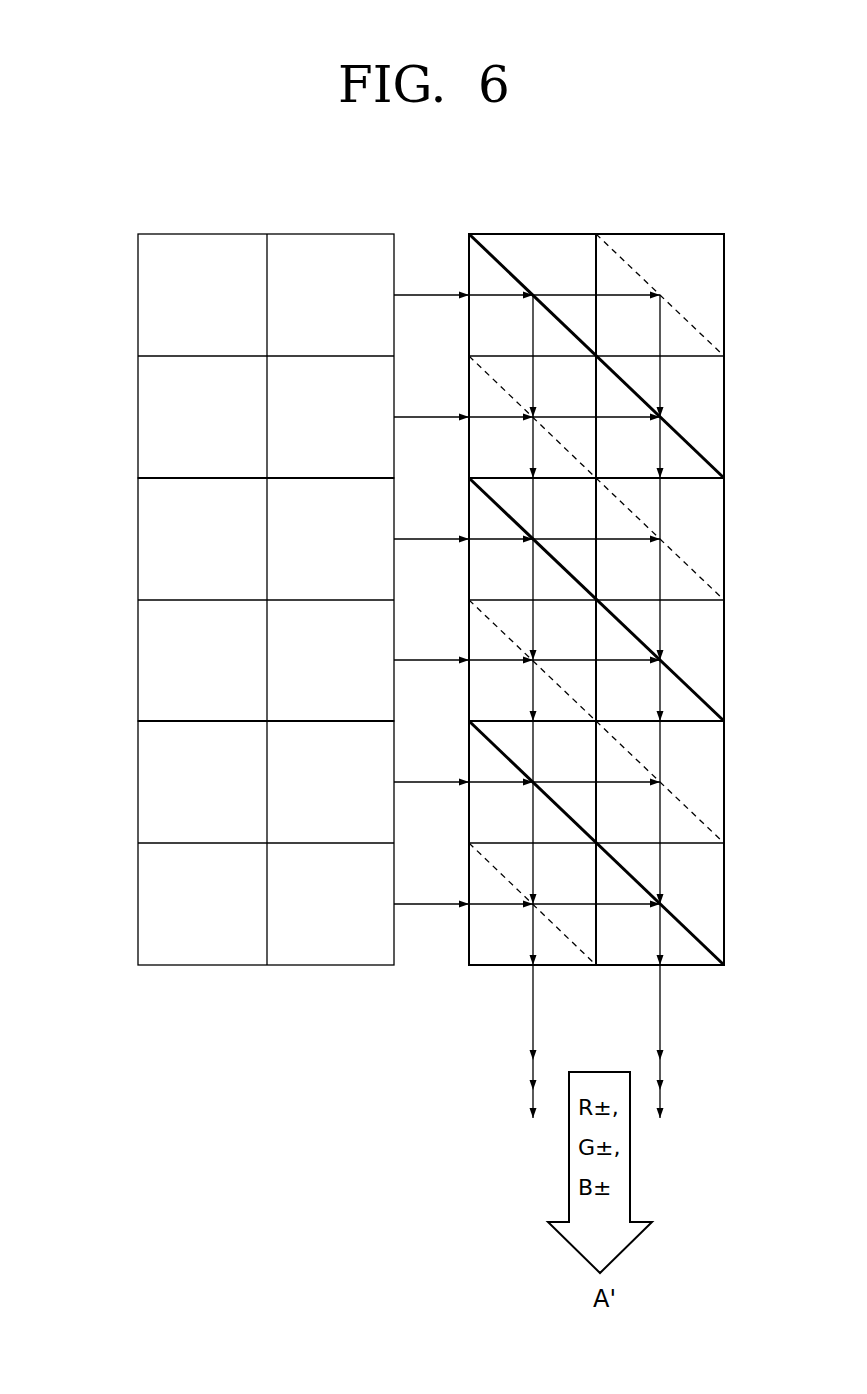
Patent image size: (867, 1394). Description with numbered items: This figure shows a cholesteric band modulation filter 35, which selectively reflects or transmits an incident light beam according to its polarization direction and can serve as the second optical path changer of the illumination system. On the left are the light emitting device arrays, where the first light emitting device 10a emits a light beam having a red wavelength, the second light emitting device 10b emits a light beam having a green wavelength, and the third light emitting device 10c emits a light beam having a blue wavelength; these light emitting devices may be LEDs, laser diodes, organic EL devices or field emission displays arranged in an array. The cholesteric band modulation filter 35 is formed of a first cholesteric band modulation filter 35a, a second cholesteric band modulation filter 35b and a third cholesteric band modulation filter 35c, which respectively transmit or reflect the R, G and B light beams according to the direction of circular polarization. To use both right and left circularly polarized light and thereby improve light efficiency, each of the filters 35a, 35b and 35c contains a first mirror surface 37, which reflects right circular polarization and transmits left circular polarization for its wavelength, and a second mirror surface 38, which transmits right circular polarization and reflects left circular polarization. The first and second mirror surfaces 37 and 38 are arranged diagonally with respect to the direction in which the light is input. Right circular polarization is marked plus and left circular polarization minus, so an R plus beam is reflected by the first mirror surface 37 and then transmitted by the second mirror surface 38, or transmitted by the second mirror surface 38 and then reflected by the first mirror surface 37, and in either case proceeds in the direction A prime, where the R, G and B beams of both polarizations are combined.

The first light emitting device 10a is at (152, 825).
The second light emitting device 10b is at (152, 581).
The third light emitting device 10c is at (152, 337).
The cholesteric band modulation filter 35 is at (698, 192).
The first cholesteric band modulation filter 35a is at (733, 723).
The second cholesteric band modulation filter 35b is at (733, 480).
The third cholesteric band modulation filter 35c is at (733, 236).
The first mirror surface 37 is at (505, 237).
The second mirror surface 38 is at (632, 237).